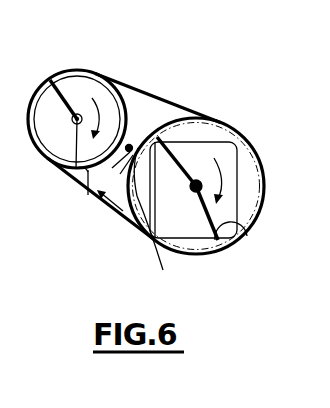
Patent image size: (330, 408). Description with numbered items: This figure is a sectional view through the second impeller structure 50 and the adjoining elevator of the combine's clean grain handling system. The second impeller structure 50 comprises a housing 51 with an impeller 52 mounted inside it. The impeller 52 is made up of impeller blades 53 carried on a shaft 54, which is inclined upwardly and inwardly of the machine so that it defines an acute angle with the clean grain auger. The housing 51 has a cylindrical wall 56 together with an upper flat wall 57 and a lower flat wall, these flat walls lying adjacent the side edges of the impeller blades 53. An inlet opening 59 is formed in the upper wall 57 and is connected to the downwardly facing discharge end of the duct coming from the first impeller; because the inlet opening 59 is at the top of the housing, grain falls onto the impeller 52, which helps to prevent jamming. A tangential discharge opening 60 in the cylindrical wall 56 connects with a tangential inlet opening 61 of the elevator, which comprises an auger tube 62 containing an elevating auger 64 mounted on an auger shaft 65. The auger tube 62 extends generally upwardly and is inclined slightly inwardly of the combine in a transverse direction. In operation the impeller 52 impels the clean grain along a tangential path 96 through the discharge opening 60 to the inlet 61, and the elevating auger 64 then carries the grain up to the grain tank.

The second impeller structure 50 is at (149, 248).
The housing 51 is at (264, 195).
The impeller 52 is at (165, 172).
The impeller blades 53 is at (247, 228).
The shaft 54 is at (199, 192).
The cylindrical wall 56 is at (190, 108).
The upper flat wall 57 is at (248, 184).
The inlet opening 59 is at (238, 172).
The tangential discharge opening 60 is at (134, 146).
The tangential inlet opening 61 is at (130, 146).
The auger tube 62 is at (44, 74).
The elevating auger 64 is at (88, 195).
The auger shaft 65 is at (72, 183).
The tangential path 96 is at (117, 212).